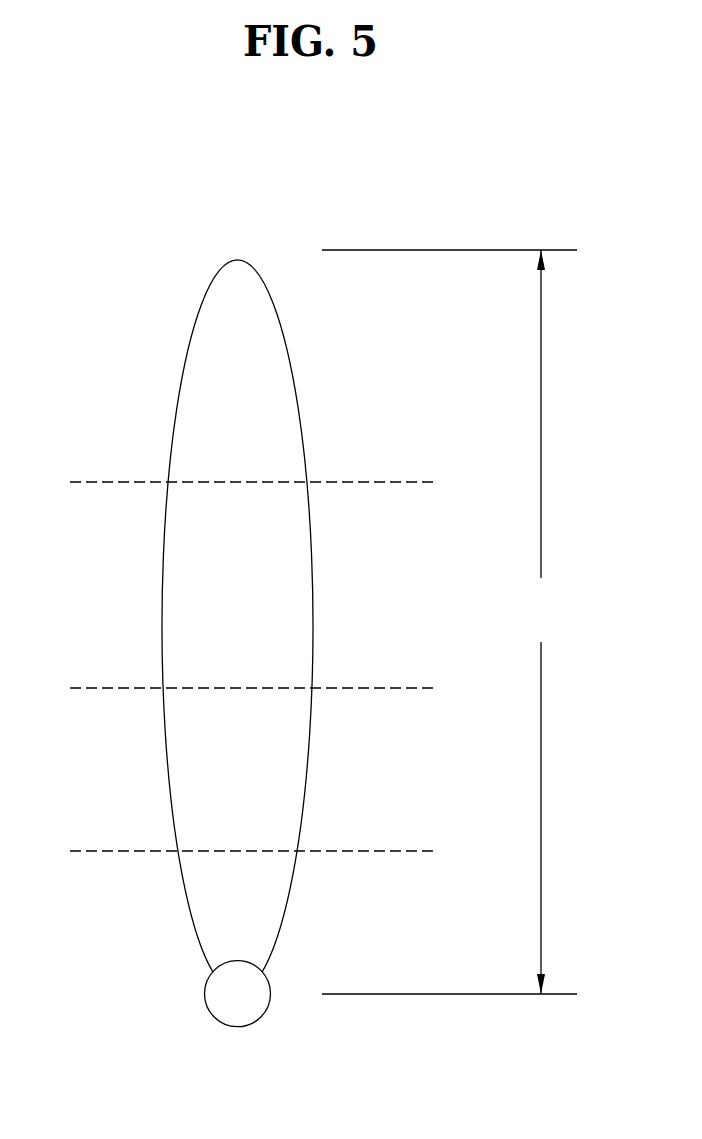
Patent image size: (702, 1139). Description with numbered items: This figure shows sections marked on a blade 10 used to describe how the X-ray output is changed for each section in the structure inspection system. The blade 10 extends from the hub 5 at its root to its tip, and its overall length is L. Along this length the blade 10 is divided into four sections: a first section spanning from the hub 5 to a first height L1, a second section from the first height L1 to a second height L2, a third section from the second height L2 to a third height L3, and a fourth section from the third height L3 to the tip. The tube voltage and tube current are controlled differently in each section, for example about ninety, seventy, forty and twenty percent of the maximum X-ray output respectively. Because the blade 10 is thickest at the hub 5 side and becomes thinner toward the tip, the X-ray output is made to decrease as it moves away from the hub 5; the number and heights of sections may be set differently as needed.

The blade 10 is at (255, 268).
The hub 5 is at (247, 1006).
The third height L3 is at (237, 484).
The second height L2 is at (237, 690).
The first height L1 is at (237, 853).
The length of the blade L is at (449, 622).